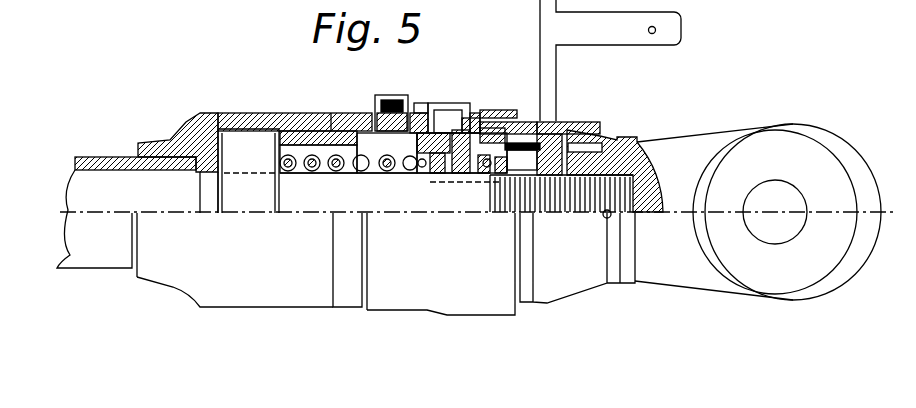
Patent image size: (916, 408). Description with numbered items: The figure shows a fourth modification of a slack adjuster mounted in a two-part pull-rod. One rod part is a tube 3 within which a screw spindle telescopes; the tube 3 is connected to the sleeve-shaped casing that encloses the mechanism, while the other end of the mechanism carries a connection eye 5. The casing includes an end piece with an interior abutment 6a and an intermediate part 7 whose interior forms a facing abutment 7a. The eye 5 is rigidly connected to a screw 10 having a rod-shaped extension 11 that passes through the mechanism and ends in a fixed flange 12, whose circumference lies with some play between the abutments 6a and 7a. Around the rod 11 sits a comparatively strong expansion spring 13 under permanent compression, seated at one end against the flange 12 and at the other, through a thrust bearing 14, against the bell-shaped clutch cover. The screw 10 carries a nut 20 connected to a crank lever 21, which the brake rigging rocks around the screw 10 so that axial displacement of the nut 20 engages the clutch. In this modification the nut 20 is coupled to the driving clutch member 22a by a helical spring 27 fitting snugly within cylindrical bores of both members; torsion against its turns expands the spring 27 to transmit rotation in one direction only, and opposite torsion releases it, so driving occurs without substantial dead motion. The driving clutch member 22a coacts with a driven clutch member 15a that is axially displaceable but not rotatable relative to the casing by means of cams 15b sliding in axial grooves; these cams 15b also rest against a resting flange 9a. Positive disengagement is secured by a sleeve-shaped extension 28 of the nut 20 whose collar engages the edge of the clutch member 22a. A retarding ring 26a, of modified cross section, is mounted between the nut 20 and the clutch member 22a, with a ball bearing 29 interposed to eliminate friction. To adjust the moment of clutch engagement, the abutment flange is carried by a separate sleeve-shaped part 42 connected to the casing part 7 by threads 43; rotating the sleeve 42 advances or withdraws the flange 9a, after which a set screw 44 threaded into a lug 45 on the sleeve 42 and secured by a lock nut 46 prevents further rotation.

The tube 3 is at (110, 157).
The abutment 6a is at (184, 131).
The intermediate part 7 is at (318, 113).
The abutment 7a is at (293, 113).
The expansion spring 13 is at (290, 195).
The rod-shaped extension 11 is at (323, 186).
The lock nut 46 is at (385, 99).
The threads 43 is at (347, 110).
The set screw 44 is at (372, 108).
The lug 45 is at (420, 102).
The sleeve-shaped part 42 is at (418, 112).
The driven clutch member 15a is at (455, 110).
The cams 15b is at (458, 103).
The resting flange 9a is at (490, 112).
The sleeve-shaped extension 28 is at (498, 110).
The crank lever 21 is at (540, 20).
The helical spring 27 is at (558, 122).
The nut 20 is at (580, 130).
The connection eye 5 is at (700, 140).
The fixed flange 12 is at (230, 193).
The thrust bearing 14 is at (412, 178).
The screw 10 is at (560, 195).
The driving clutch member 22a is at (415, 180).
The ball bearing 29 is at (487, 175).
The retarding ring 26a is at (466, 150).